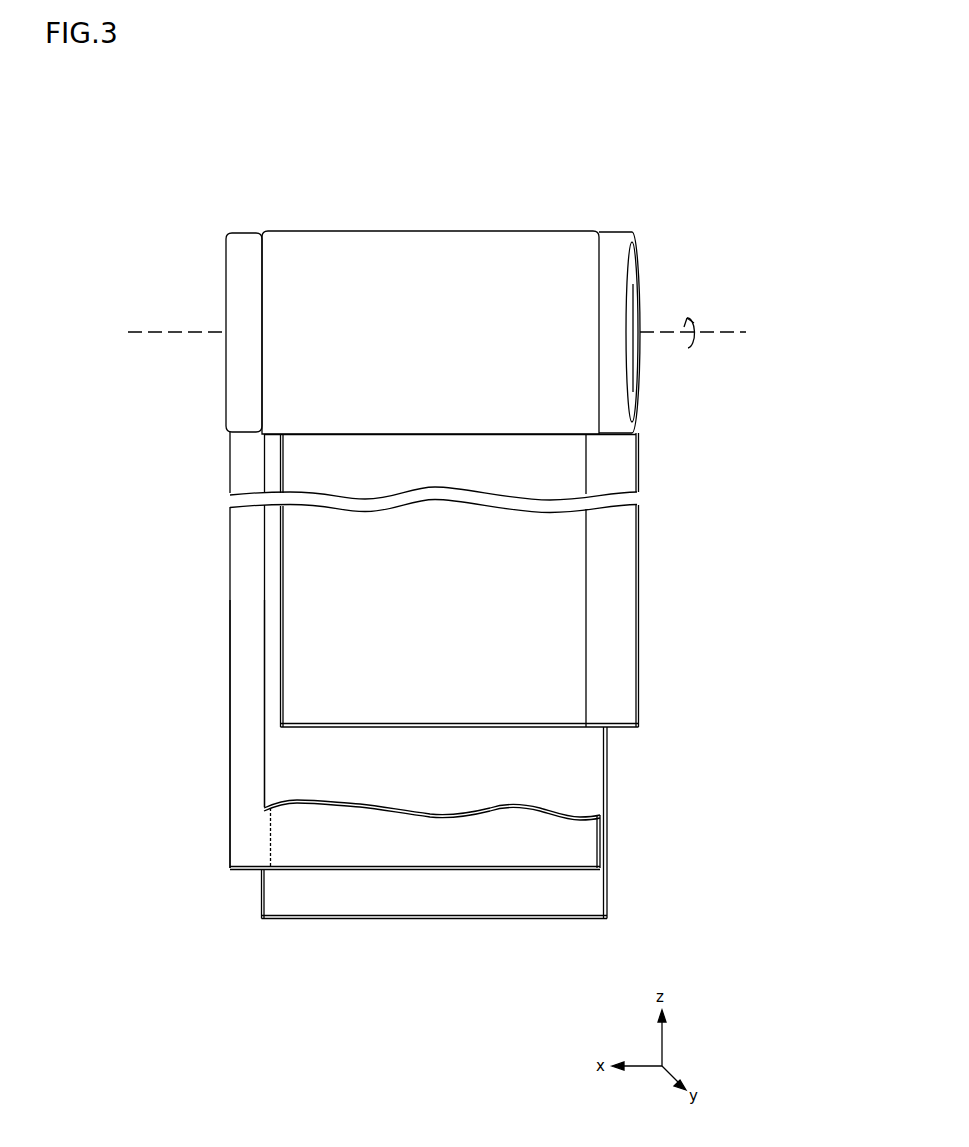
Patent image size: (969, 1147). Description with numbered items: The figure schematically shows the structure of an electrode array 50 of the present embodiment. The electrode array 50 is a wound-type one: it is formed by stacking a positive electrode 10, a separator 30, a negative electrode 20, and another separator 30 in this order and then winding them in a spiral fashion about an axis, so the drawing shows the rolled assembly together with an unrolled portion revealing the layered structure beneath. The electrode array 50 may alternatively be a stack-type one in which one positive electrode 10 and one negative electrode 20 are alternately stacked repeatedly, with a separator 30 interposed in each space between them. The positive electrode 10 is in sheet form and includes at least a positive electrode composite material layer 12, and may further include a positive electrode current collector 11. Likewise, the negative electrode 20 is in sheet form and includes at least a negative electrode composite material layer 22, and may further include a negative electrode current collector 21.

The electrode array 50 is at (207, 186).
The positive electrode 10 is at (531, 580).
The positive electrode current collector 11 is at (621, 607).
The positive electrode composite material layer 12 is at (577, 559).
The negative electrode 20 is at (334, 735).
The negative electrode current collector 21 is at (231, 767).
The negative electrode composite material layer 22 is at (312, 848).
The separator 30 is at (263, 907).